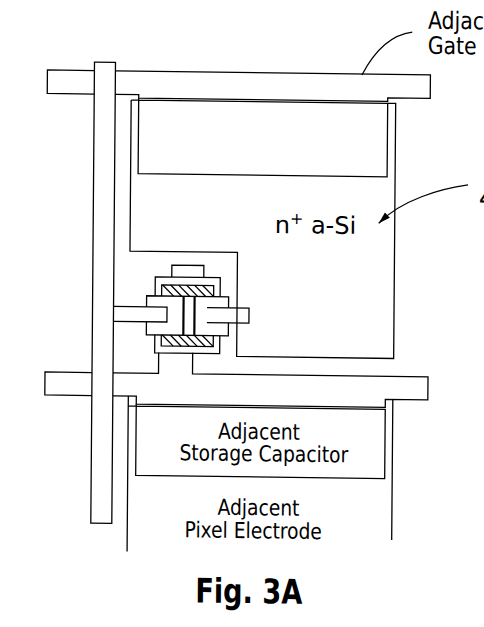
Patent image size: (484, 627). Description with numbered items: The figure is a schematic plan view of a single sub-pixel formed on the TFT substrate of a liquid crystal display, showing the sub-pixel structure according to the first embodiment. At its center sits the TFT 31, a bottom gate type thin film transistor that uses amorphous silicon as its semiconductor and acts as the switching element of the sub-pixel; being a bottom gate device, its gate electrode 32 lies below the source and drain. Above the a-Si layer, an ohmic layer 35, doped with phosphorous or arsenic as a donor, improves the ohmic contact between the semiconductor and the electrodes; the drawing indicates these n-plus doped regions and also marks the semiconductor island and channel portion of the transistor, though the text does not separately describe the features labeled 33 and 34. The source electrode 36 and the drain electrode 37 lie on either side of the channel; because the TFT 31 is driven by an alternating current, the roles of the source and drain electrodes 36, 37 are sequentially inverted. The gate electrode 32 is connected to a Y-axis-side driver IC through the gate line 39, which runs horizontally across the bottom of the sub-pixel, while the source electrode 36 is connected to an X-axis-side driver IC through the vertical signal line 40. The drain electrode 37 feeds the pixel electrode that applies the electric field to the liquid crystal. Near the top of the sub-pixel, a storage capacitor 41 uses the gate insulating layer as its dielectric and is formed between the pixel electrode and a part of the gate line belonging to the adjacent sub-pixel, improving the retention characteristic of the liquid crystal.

The TFT 31 is at (135, 284).
The gate electrode 32 is at (187, 271).
The amorphous silicon layer 33 is at (217, 352).
The channel region 34 is at (190, 348).
The ohmic layer 35 is at (218, 302).
The source electrode 36 is at (137, 318).
The drain electrode 37 is at (249, 316).
The gate line 39 is at (70, 392).
The signal line 40 is at (91, 482).
The storage capacitor 41 is at (288, 154).